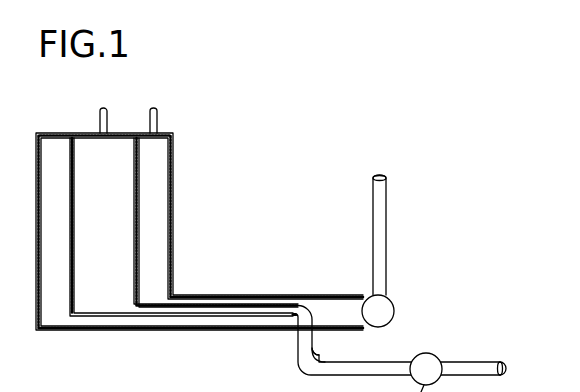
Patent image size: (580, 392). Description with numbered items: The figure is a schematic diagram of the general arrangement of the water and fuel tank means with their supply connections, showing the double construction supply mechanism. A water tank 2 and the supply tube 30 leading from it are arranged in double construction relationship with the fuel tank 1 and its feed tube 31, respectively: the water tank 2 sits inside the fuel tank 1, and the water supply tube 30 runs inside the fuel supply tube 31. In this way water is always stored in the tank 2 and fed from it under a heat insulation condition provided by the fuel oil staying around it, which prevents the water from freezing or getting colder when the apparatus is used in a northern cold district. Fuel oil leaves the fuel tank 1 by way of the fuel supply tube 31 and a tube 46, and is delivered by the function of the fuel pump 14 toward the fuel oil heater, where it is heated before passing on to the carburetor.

The fuel tank 1 is at (173, 200).
The water tank 2 is at (70, 206).
The fuel pump 14 is at (394, 311).
The supply tube 30 is at (202, 317).
The fuel supply tube 31 is at (245, 296).
The vaporized fuel oil supplying tube 46 is at (387, 231).